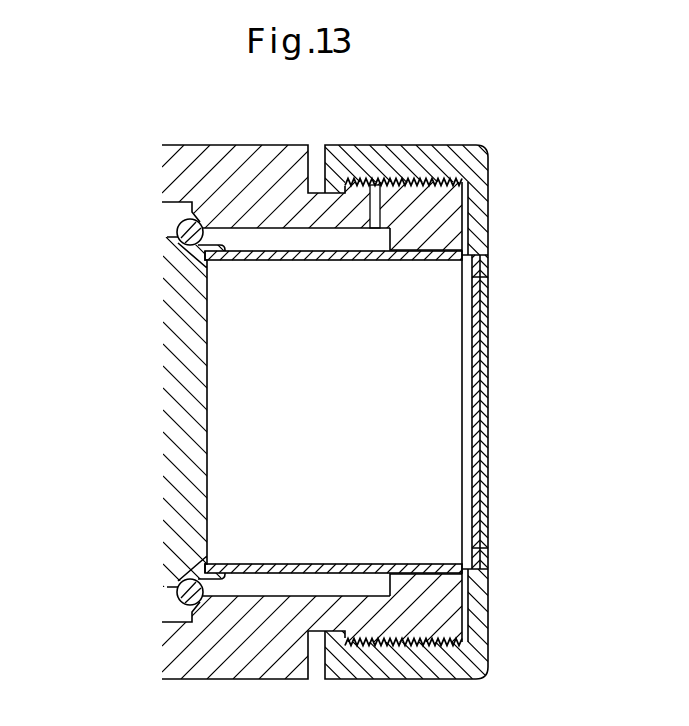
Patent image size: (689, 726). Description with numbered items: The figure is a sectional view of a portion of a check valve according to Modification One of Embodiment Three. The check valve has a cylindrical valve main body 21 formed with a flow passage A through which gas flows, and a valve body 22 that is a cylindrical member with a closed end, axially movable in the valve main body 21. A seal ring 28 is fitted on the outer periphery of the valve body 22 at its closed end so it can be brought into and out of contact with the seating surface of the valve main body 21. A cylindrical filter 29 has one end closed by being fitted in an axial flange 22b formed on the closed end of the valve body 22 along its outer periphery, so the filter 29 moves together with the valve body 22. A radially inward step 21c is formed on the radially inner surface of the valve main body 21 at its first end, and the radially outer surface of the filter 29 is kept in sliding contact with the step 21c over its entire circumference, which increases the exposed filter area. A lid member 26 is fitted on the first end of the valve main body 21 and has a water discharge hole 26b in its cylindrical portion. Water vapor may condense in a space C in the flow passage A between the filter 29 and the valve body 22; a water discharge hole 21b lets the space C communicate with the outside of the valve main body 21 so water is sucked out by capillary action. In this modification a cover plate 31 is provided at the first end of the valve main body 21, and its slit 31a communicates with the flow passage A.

The valve main body 21 is at (187, 173).
The water discharge hole 21b is at (347, 192).
The radially inward step 21c is at (414, 238).
The valve body 22 is at (178, 325).
The axial flange 22b is at (213, 249).
The lid member 26 is at (438, 157).
The water discharge hole 26b is at (488, 255).
The seal ring 28 is at (177, 229).
The filter 29 is at (349, 256).
The cover plate 31 is at (487, 325).
The slit 31a is at (466, 262).
The flow passage A is at (438, 413).
The space C is at (256, 238).